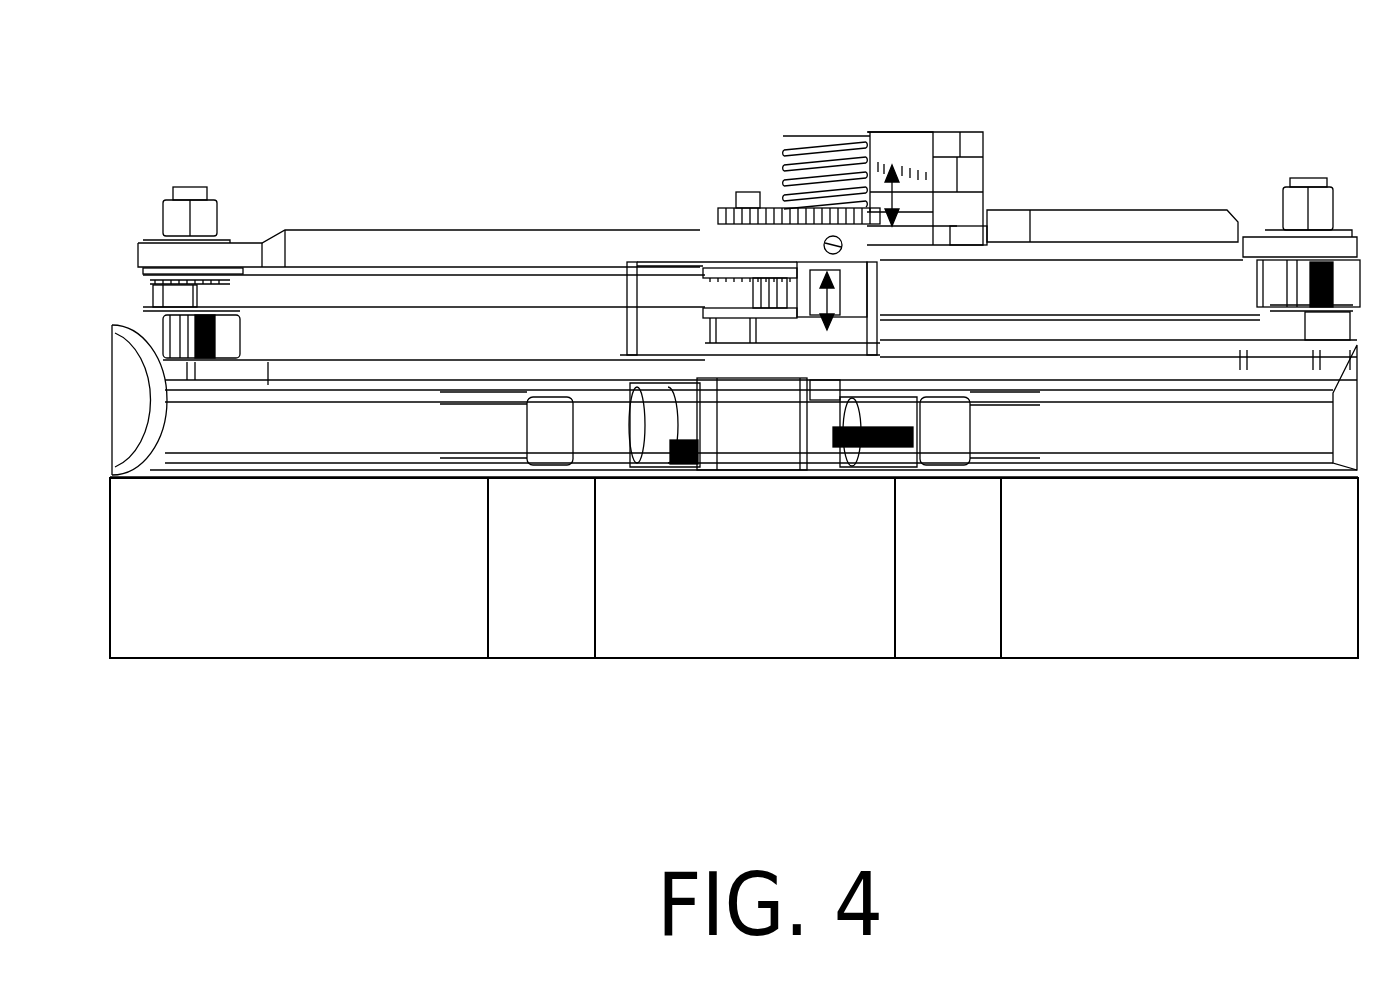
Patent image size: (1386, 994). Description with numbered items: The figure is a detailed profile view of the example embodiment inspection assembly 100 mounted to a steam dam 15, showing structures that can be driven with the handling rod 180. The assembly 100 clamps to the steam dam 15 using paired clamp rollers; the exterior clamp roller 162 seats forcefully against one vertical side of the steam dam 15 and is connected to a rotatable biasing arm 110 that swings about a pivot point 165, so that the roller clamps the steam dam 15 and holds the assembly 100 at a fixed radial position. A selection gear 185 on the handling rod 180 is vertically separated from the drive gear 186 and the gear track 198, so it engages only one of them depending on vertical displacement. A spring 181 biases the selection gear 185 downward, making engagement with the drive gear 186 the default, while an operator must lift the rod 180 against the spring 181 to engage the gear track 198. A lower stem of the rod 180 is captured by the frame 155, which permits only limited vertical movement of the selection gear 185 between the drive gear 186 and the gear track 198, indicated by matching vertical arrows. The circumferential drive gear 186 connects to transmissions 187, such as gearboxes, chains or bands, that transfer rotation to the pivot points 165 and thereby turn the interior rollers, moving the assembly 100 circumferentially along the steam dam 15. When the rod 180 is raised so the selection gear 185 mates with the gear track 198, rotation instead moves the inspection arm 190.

The steam dam 15 is at (168, 645).
The inspection assembly 100 is at (320, 170).
The biasing arm 110 is at (1180, 430).
The frame 155 is at (393, 245).
The exterior clamp roller 162 is at (943, 597).
The pivot point 165 is at (186, 255).
The handling rod 180 is at (810, 142).
The spring 181 is at (860, 132).
The selection gear 185 is at (785, 217).
The drive gear 186 is at (748, 205).
The transmission 187 is at (575, 297).
The inspection arm 190 is at (985, 140).
The gear track 198 is at (900, 145).